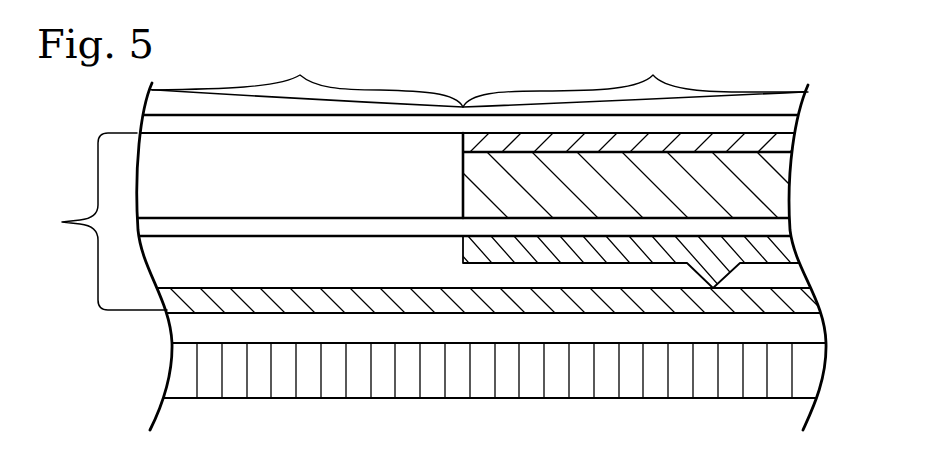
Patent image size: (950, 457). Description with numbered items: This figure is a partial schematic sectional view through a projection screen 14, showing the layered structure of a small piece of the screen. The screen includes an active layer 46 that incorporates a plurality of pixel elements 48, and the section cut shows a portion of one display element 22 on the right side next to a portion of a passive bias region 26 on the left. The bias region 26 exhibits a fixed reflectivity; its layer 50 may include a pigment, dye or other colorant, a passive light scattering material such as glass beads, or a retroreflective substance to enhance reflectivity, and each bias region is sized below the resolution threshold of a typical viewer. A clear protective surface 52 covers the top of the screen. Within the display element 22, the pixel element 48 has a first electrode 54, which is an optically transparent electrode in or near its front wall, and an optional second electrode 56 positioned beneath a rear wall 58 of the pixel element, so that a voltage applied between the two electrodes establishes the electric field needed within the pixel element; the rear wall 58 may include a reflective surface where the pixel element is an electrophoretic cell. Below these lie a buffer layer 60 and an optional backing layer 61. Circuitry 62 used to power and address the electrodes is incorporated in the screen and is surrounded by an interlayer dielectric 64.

The projection screen 14 is at (756, 45).
The display element 22 is at (635, 78).
The bias region 26 is at (307, 77).
The active layer 46 is at (99, 221).
The pixel element 48 is at (845, 181).
The layer of bias region 50 is at (147, 170).
The clear protective surface 52 is at (787, 127).
The first electrode 54 is at (777, 143).
The second electrode 56 is at (792, 253).
The rear wall 58 is at (787, 228).
The buffer layer 60 is at (813, 327).
The backing layer 61 is at (803, 372).
The circuitry 62 is at (815, 302).
The interlayer dielectric 64 is at (153, 253).